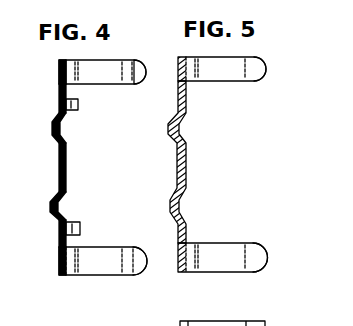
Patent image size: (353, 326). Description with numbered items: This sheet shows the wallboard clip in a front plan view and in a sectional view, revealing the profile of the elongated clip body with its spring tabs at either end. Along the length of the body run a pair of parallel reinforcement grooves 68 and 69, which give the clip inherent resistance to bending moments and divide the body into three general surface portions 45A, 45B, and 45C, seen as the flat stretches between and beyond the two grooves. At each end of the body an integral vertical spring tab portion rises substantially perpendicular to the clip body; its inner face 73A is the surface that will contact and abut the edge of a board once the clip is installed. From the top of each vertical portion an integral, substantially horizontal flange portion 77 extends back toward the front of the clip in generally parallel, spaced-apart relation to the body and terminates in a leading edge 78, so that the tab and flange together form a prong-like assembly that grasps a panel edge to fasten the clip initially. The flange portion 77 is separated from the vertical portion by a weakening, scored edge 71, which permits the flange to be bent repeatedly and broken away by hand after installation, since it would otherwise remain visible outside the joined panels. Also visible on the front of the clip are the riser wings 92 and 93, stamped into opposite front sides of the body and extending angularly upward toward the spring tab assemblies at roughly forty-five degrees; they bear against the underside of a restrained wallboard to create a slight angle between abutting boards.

In FIG. 4, the scored edge 71 is at (125, 55).
In FIG. 4, the inner face 73A is at (98, 74).
In FIG. 5, the inner face 73A is at (223, 71).
In FIG. 4, the leading edge 78 is at (145, 80).
In FIG. 5, the leading edge 78 is at (259, 242).
In FIG. 5, the flange portion 77 is at (250, 74).
In FIG. 4, the surface portion 45A is at (62, 88).
In FIG. 4, the surface portion 45B is at (61, 174).
In FIG. 4, the surface portion 45C is at (59, 250).
In FIG. 4, the reinforcement groove 69 is at (53, 128).
In FIG. 4, the reinforcement groove 68 is at (52, 208).
In FIG. 4, the riser wing 93 is at (78, 104).
In FIG. 4, the riser wing 92 is at (80, 228).